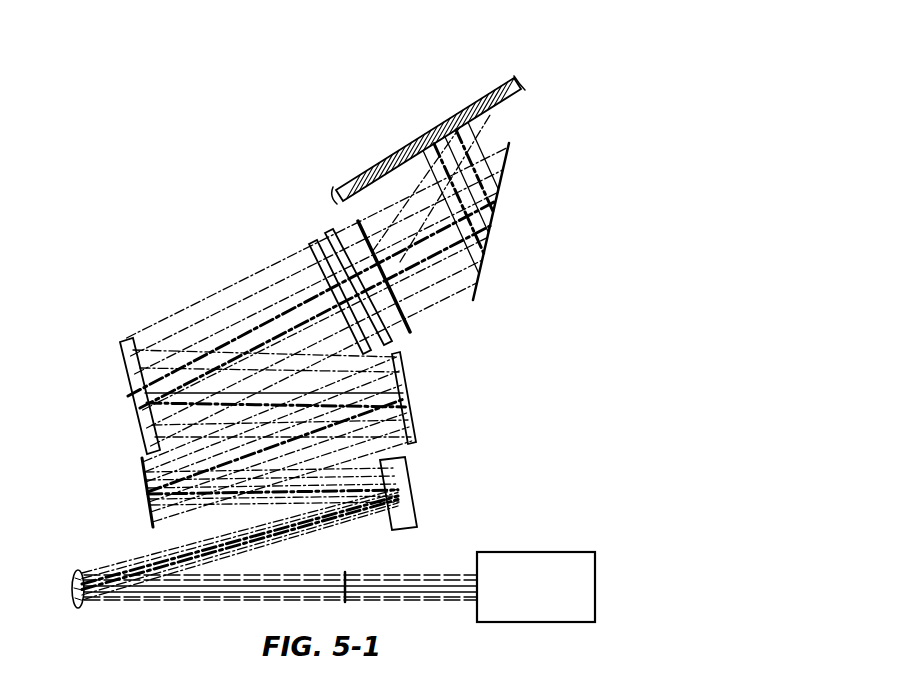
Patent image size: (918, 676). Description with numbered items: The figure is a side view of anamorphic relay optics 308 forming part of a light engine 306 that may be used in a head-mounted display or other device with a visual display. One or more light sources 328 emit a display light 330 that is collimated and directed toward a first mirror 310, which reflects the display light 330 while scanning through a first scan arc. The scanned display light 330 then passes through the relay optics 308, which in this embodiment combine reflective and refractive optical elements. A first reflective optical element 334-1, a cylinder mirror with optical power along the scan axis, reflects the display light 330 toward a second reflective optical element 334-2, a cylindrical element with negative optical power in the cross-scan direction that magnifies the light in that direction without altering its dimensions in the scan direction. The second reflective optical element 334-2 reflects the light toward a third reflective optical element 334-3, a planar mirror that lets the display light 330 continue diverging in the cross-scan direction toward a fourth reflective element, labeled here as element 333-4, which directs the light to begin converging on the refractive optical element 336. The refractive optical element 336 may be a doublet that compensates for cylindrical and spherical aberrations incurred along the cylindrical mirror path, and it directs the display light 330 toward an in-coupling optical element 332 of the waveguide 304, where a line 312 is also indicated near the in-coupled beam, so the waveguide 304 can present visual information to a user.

The light engine 306 is at (504, 49).
The waveguide 304 is at (370, 178).
The image plane / focal line 312 is at (493, 220).
The in-coupling optical element 332 is at (442, 144).
The relay optics 308 is at (207, 299).
The refractive optical element 336 is at (410, 322).
The fold mirror 333-4 is at (128, 397).
The third reflective optical element 334-3 is at (413, 427).
The second reflective optical element 334-2 is at (143, 493).
The first reflective optical element 334-1 is at (412, 502).
The first mirror 310 is at (76, 571).
The display light 330 is at (437, 587).
The light source 328 is at (551, 599).